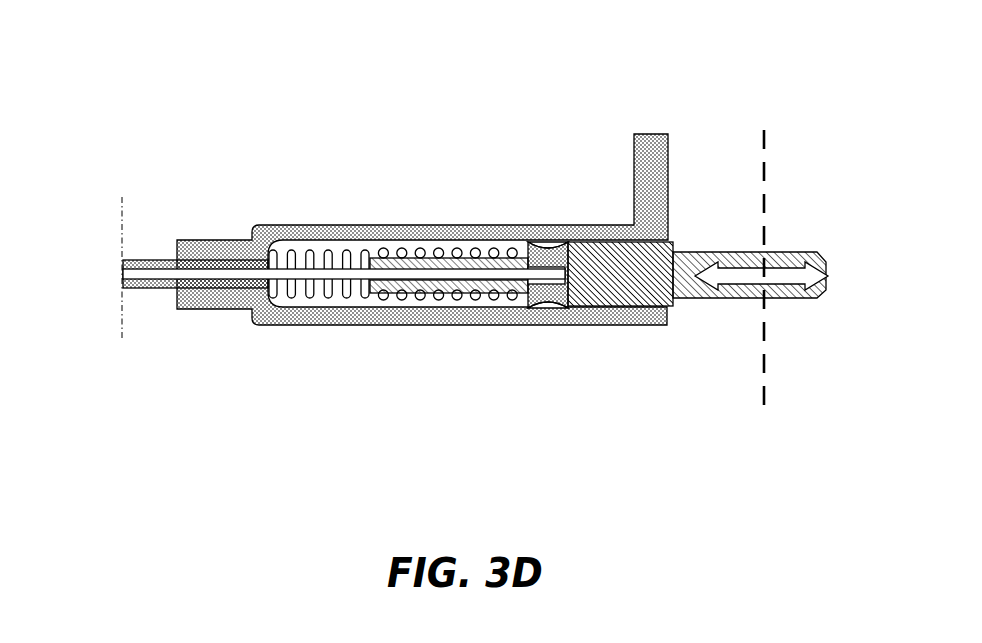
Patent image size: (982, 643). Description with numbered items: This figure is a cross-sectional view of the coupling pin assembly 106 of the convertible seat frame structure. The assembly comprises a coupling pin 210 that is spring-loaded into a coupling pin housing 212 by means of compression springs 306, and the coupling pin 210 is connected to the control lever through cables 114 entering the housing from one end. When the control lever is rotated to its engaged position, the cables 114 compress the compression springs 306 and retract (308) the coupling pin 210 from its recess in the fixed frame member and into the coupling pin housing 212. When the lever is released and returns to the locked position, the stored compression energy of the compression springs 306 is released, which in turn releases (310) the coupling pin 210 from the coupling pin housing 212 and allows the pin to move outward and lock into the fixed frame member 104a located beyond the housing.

The coupling pin assembly 106 is at (200, 64).
The fixed frame member 104a is at (855, 180).
The cables 114 is at (122, 268).
The coupling pin 210 is at (675, 268).
The coupling pin housing 212 is at (437, 230).
The compression springs 306 is at (315, 260).
The retracting 308 is at (720, 270).
The releasing 310 is at (810, 273).